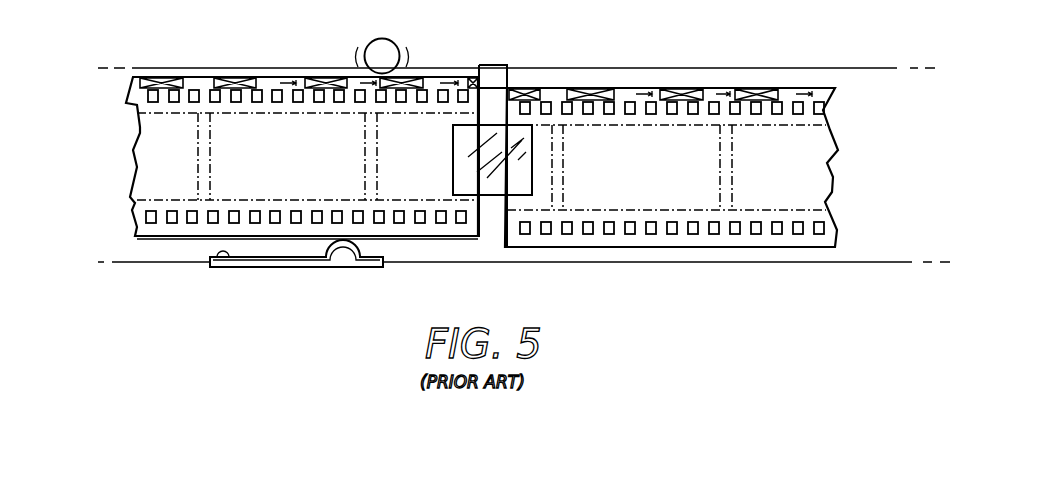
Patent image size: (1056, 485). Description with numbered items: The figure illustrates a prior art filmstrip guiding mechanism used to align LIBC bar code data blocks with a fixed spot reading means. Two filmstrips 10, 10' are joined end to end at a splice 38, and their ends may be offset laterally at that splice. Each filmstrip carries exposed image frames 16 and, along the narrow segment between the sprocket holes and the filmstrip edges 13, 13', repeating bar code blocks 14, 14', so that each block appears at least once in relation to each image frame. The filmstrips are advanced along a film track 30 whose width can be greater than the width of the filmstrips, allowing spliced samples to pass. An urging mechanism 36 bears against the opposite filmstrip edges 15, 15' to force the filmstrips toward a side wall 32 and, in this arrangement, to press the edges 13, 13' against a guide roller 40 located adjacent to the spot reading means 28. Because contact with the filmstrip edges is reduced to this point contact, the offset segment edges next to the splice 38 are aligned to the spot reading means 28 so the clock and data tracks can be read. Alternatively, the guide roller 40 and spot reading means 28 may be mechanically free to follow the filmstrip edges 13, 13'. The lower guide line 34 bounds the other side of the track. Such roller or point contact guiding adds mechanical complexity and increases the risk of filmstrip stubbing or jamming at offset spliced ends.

The filmstrip 10 is at (268, 158).
The spliced filmstrip 10' is at (715, 167).
The filmstrip edge 13 is at (308, 66).
The filmstrip edge of the spliced filmstrip 13' is at (703, 77).
The bar code blocks 14 is at (309, 52).
The bar code blocks of the spliced filmstrip 14' is at (660, 66).
The filmstrip edge 15 is at (306, 268).
The filmstrip edge of the spliced filmstrip 15' is at (672, 271).
The image frame 16 is at (220, 177).
The spot reading means 28 is at (491, 65).
The film track 30 is at (887, 133).
The side wall 32 is at (882, 69).
The lower guide rail 34 is at (888, 262).
The urging mechanism 36 is at (336, 260).
The splice 38 is at (497, 187).
The guide roller 40 is at (388, 39).